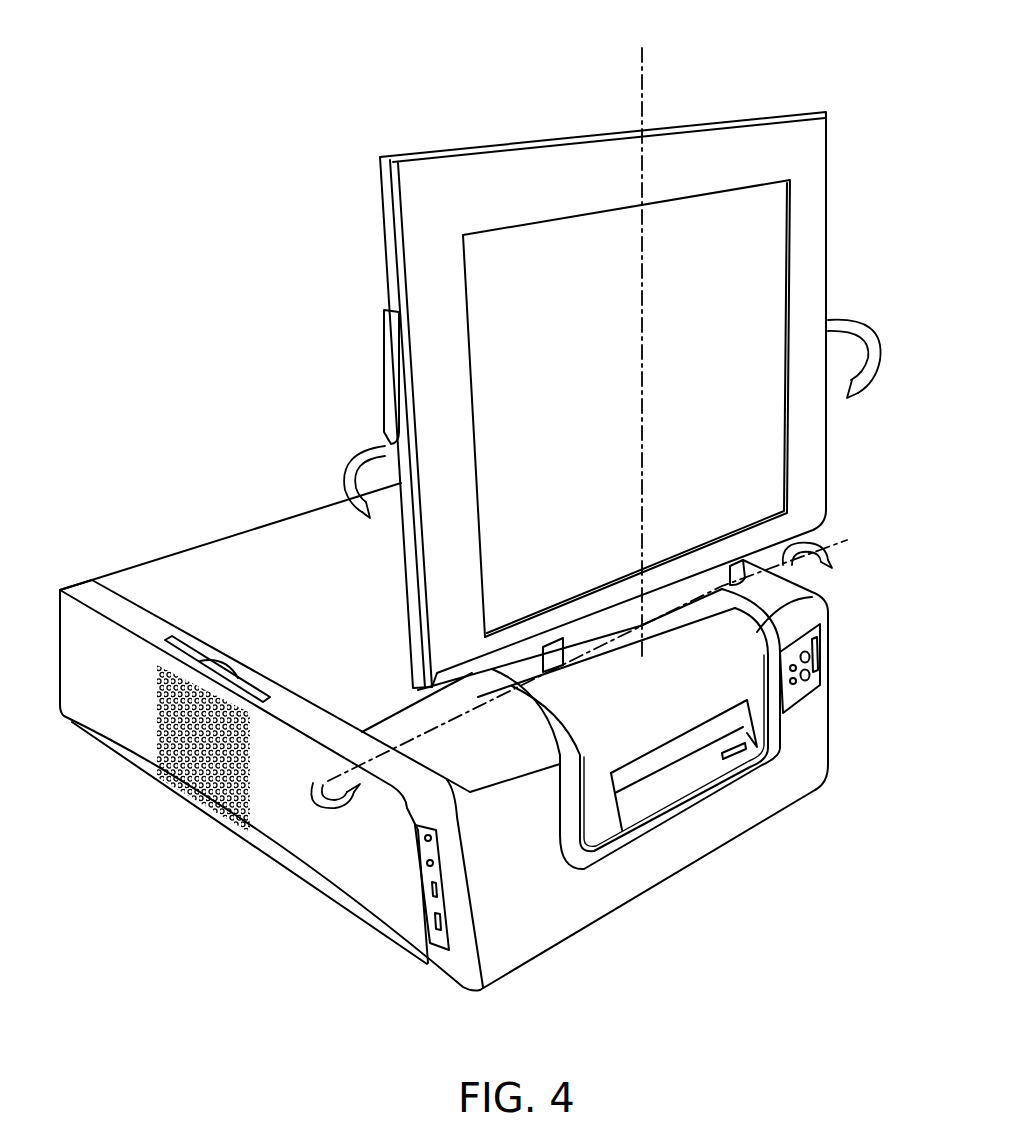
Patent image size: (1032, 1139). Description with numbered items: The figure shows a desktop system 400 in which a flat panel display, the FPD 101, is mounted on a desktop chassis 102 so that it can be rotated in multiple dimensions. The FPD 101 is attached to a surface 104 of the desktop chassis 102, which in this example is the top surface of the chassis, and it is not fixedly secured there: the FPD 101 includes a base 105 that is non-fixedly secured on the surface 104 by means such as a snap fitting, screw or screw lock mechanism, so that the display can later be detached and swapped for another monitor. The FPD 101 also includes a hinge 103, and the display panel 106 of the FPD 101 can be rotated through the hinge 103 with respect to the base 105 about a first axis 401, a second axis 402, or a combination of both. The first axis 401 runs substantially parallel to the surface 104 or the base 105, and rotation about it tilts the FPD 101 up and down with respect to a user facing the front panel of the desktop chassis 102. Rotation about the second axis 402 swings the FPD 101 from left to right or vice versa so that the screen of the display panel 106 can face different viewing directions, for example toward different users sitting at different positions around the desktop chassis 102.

The system 400 is at (128, 257).
The FPD 101 is at (436, 132).
The desktop chassis 102 is at (113, 784).
The hinge 103 is at (743, 590).
The surface 104 is at (299, 612).
The base 105 is at (545, 738).
The display panel 106 is at (590, 191).
The first axis 401 is at (928, 545).
The second axis 402 is at (712, 43).